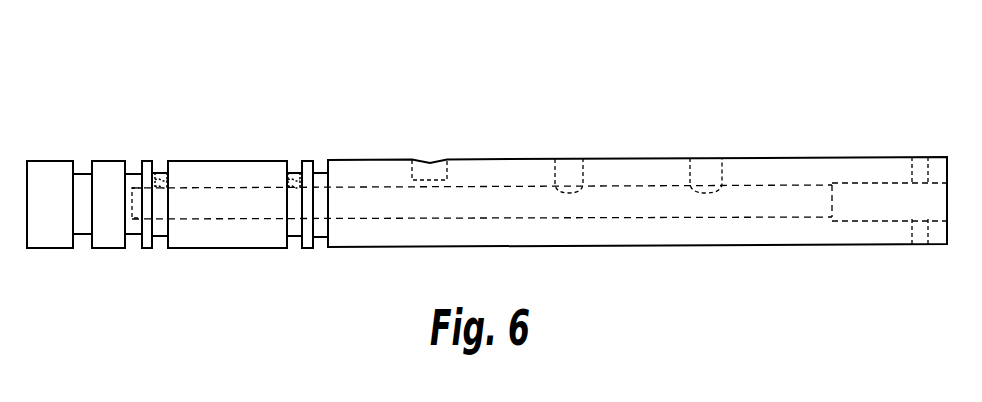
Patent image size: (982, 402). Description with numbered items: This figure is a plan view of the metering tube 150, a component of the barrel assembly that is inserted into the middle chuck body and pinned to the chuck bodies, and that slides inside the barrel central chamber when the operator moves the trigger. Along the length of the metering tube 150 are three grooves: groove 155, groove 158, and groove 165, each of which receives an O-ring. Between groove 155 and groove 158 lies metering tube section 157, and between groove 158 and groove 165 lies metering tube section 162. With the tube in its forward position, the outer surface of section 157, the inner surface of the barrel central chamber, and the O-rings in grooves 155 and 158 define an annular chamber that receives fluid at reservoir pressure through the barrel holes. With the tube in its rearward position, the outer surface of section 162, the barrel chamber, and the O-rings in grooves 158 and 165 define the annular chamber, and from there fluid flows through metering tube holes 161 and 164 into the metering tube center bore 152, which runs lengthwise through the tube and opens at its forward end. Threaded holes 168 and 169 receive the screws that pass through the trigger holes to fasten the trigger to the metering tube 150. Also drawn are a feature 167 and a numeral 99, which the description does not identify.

The metering tube 150 is at (770, 118).
The metering tube center bore 152 is at (671, 220).
The metering tube groove 155 is at (82, 234).
The metering tube section 157 is at (109, 160).
The metering tube groove 158 is at (133, 234).
The metering tube hole 161 is at (159, 172).
The metering tube section 162 is at (228, 160).
The metering tube hole 164 is at (297, 160).
The metering tube groove 165 is at (323, 236).
The slot 167 is at (431, 160).
The metering tube threaded hole 168 is at (571, 159).
The metering tube threaded hole 169 is at (706, 158).
The stray numeral 99 is at (90, 400).